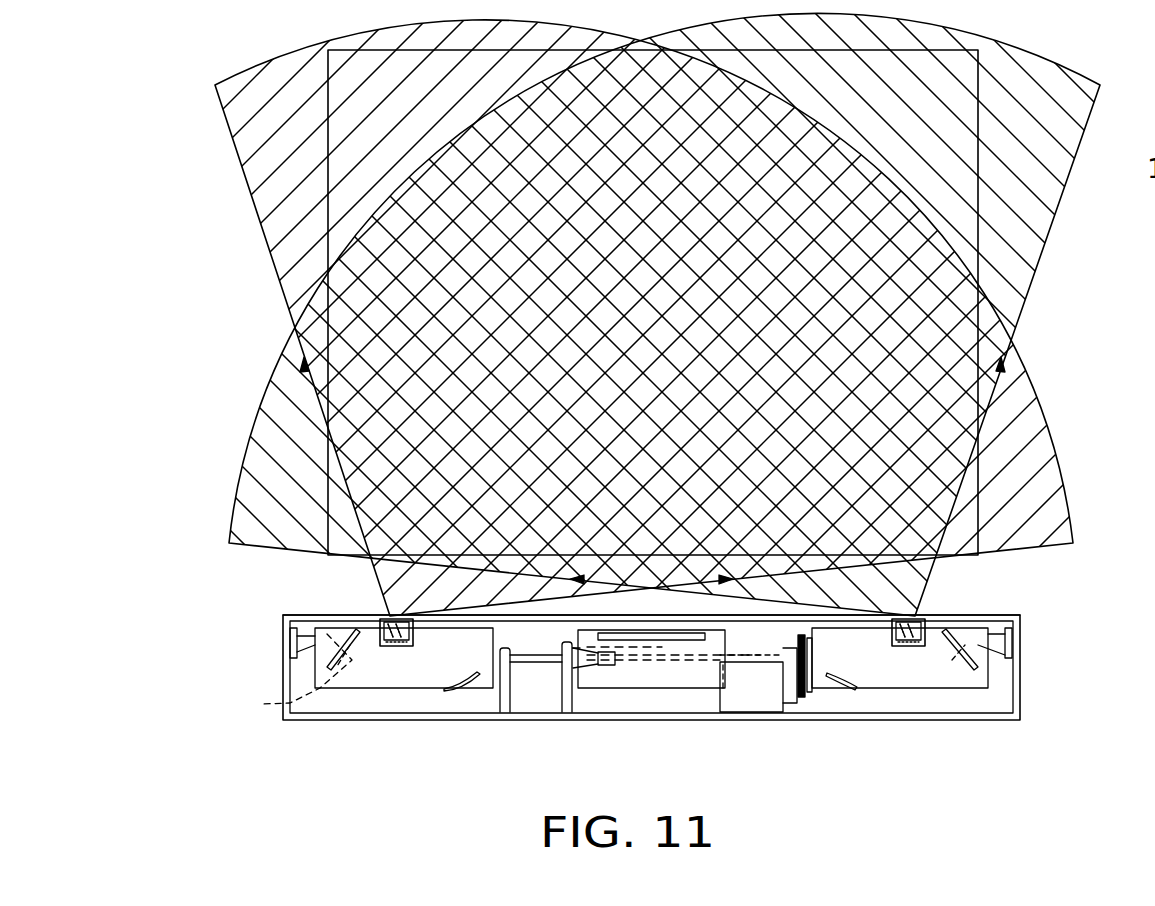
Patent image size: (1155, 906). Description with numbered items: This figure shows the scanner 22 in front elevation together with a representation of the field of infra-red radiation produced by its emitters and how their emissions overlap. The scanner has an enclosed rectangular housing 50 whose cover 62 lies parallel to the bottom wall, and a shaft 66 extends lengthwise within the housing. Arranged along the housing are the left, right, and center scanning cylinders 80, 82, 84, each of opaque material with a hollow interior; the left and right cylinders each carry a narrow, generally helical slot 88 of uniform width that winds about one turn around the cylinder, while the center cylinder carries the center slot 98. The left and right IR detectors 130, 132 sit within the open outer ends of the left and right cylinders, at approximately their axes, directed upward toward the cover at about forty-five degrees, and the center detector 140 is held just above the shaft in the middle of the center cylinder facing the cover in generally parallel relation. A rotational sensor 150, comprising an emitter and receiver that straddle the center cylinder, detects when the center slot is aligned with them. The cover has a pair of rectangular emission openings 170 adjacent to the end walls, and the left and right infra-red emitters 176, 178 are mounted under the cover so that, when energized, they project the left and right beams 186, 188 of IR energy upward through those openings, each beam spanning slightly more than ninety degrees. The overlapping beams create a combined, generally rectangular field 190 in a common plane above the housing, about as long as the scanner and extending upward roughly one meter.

The scanner 22 is at (270, 628).
The housing 50 is at (1020, 720).
The cover 62 is at (300, 616).
The shaft 66 is at (527, 663).
The left scanning cylinder 80 is at (368, 680).
The right scanning cylinder 82 is at (910, 680).
The center scanning cylinder 84 is at (610, 682).
The helical slot 88 is at (460, 690).
The center slot 98 is at (695, 643).
The left IR detector 130 is at (275, 676).
The right IR detector 132 is at (947, 665).
The center detector 140 is at (637, 655).
The rotational sensor 150 is at (600, 668).
The emission openings 170 is at (388, 617).
The left infra-red emitter 176 is at (387, 618).
The right infra-red emitter 178 is at (923, 620).
The left beam 186 is at (264, 236).
The right beam 188 is at (1043, 250).
The field 190 is at (898, 42).